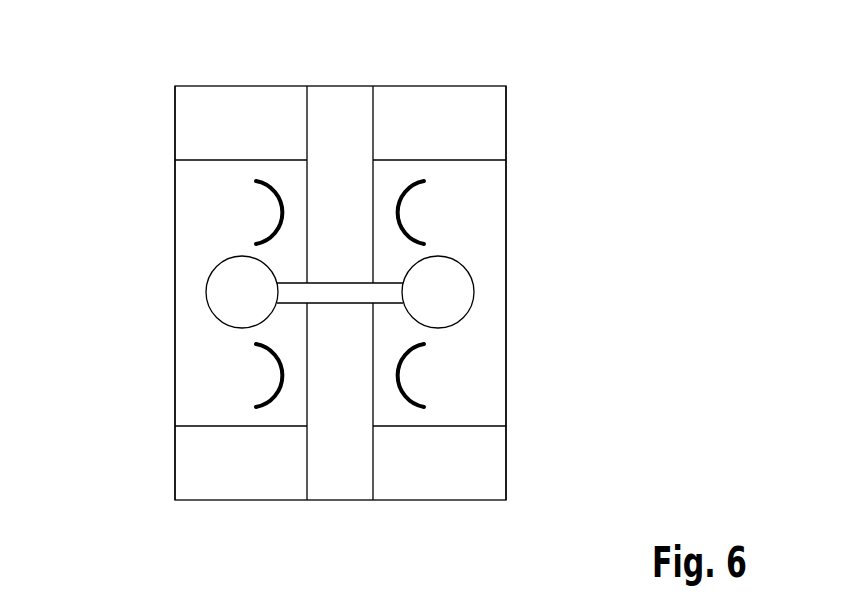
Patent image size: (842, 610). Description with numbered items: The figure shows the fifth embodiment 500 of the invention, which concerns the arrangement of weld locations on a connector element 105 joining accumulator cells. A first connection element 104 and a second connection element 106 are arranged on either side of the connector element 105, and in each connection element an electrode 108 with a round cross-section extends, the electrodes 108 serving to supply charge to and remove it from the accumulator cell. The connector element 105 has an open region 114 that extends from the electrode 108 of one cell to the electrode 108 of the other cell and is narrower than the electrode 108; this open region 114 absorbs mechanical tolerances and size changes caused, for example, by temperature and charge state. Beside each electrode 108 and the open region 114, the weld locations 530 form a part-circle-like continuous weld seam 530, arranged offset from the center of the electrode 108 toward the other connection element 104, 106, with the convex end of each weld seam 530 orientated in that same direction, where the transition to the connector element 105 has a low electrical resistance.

The fifth embodiment 500 is at (580, 63).
The first connection element 104 is at (203, 243).
The second connection element 106 is at (478, 243).
The connector element 105 is at (343, 108).
The open region 114 is at (338, 295).
The electrode 108 is at (232, 293).
The weld locations 530 is at (250, 183).